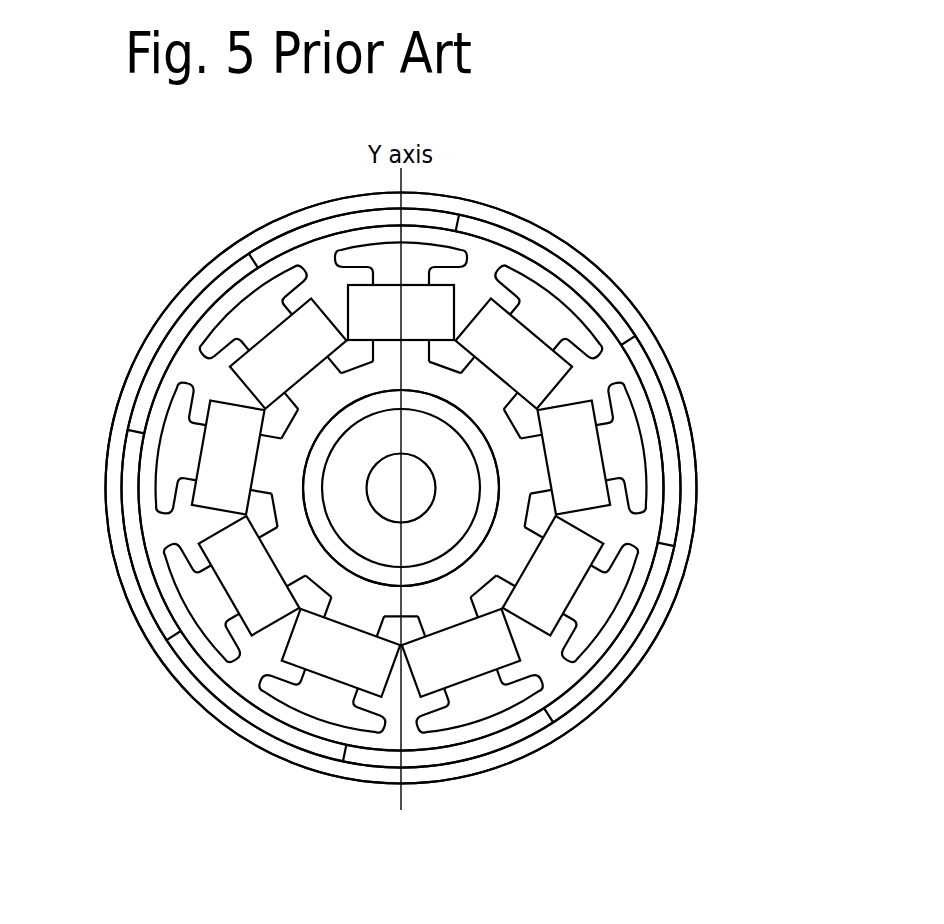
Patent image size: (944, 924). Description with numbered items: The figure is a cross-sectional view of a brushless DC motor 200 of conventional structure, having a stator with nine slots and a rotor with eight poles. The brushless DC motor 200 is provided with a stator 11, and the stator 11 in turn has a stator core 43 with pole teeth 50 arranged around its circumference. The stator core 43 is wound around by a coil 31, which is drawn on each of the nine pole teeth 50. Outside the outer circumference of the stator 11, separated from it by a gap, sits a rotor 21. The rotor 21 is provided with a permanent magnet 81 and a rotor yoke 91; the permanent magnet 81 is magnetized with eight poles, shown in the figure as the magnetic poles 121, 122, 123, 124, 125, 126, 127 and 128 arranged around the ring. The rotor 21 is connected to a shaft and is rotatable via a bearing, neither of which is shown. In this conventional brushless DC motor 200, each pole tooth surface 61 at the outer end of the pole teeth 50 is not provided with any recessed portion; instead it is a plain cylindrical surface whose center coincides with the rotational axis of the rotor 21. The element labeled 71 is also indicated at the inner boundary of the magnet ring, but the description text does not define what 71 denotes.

The brushless DC motor 200 is at (637, 193).
The stator 11 is at (768, 288).
The coil 31 is at (497, 353).
The stator core 43 is at (473, 400).
The pole tooth surface 61 is at (650, 426).
The pole teeth 50 is at (625, 448).
The rotor 21 is at (753, 571).
The magnet inner surface 71 is at (497, 723).
The permanent magnet 81 is at (673, 583).
The rotor yoke 91 is at (647, 637).
The magnetic pole 121 is at (433, 218).
The magnetic pole 122 is at (600, 305).
The magnetic pole 123 is at (667, 528).
The magnetic pole 124 is at (593, 680).
The magnetic pole 125 is at (438, 757).
The magnetic pole 126 is at (283, 733).
The magnetic pole 127 is at (138, 553).
The magnetic pole 128 is at (152, 387).